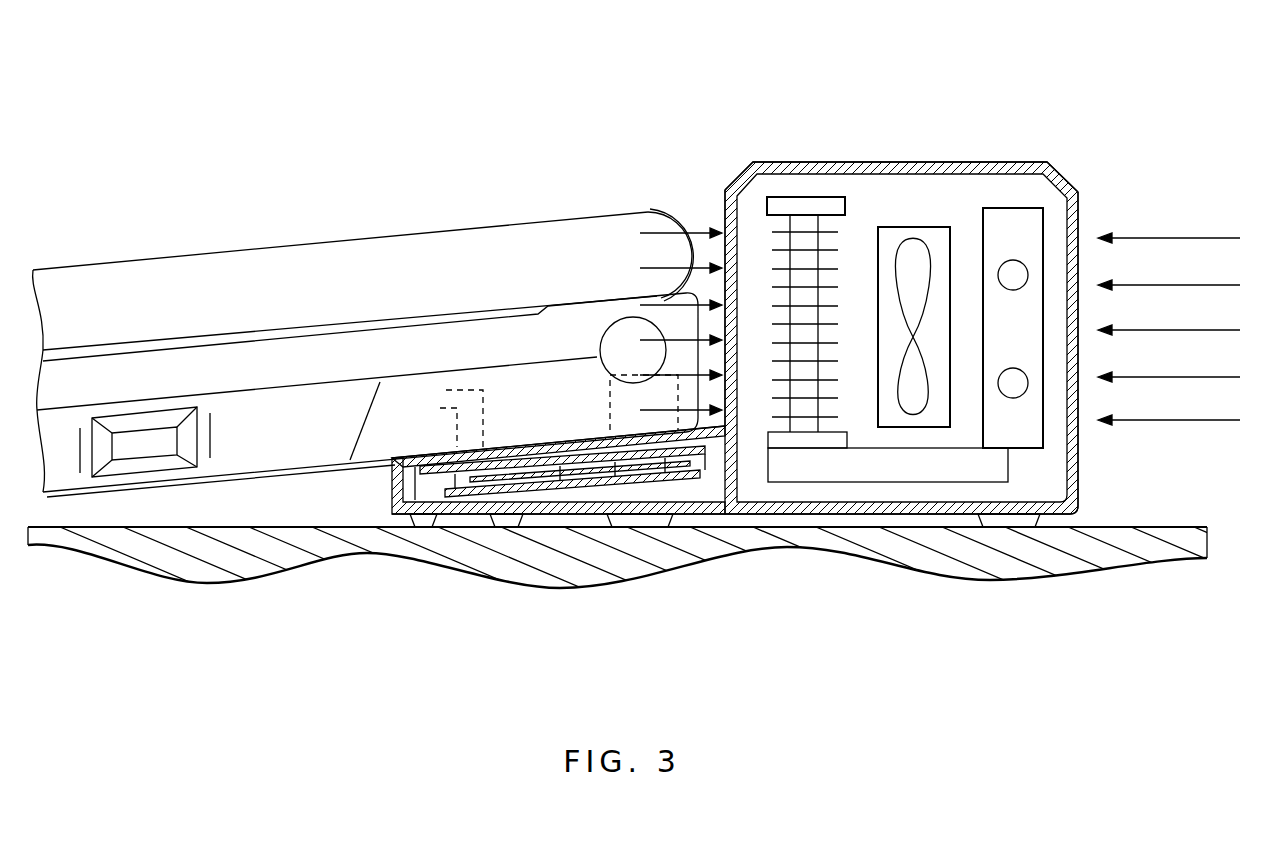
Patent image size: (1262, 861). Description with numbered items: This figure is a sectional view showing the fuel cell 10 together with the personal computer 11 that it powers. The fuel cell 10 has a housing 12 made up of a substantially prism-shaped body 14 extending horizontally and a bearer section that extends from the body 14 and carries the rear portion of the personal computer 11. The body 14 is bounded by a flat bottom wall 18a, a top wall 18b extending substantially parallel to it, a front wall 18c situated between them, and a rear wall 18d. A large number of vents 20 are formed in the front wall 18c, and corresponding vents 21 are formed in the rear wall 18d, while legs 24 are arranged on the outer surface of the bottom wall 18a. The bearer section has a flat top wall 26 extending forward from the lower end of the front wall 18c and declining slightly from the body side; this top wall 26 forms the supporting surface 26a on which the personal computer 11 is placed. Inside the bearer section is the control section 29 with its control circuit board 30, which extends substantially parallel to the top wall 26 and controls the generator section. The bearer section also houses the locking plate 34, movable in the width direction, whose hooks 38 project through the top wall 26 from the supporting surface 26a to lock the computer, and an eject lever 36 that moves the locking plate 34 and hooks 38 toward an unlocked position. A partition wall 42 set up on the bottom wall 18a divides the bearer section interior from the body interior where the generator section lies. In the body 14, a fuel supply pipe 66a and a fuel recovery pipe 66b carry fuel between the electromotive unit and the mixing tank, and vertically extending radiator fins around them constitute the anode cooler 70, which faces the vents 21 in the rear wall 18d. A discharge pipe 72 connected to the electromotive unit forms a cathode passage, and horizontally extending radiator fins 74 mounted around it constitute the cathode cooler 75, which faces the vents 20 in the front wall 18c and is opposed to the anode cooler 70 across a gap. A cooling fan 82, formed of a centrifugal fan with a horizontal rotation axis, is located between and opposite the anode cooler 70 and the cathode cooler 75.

The fuel cell 10 is at (790, 130).
The personal computer 11 is at (260, 245).
The housing 12 is at (973, 140).
The body 14 is at (1063, 157).
The bottom wall 18a is at (838, 514).
The top wall 18b is at (855, 162).
The front wall 18c is at (730, 183).
The rear wall 18d is at (1085, 476).
The vents 20 is at (737, 200).
The vents 21 is at (1108, 240).
The legs 24 is at (453, 514).
The top wall 26 is at (547, 485).
The supporting surface 26a is at (520, 456).
The control section 29 is at (434, 490).
The control circuit board 30 is at (592, 487).
The locking plate 34 is at (508, 490).
The eject lever 36 is at (657, 490).
The hooks 38 is at (446, 390).
The partition wall 42 is at (745, 500).
The fuel supply pipe 66a is at (1013, 368).
The fuel recovery pipe 66b is at (1020, 267).
The anode cooler 70 is at (1005, 218).
The discharge pipe 72 is at (808, 222).
The radiator fins 74 is at (838, 288).
The cathode cooler 75 is at (772, 257).
The cooling fan 82 is at (927, 412).